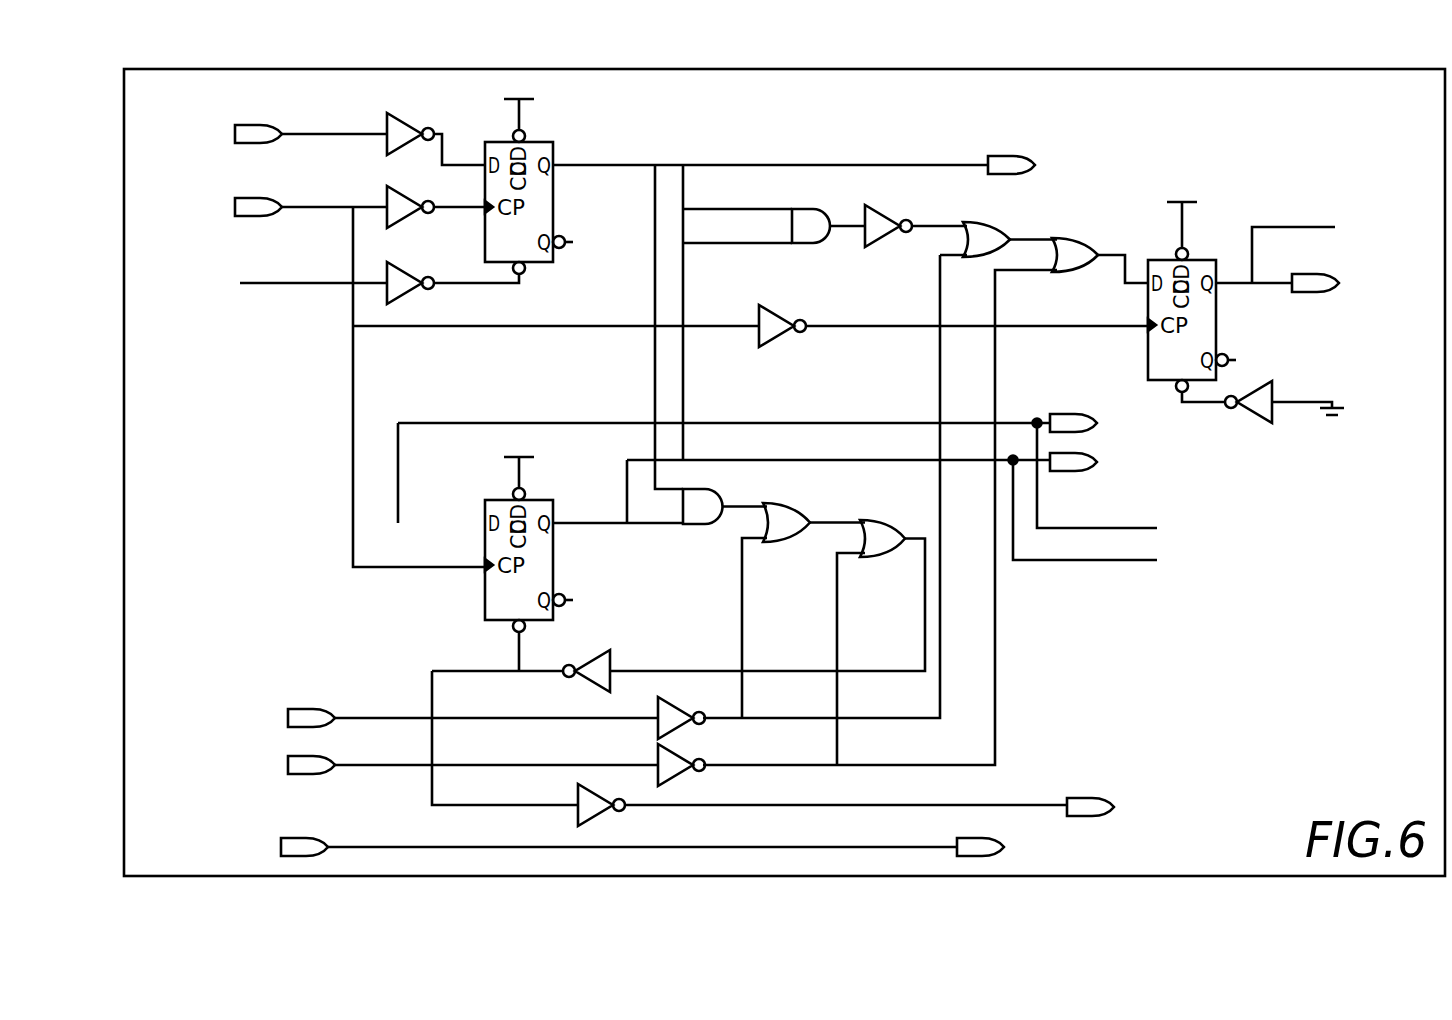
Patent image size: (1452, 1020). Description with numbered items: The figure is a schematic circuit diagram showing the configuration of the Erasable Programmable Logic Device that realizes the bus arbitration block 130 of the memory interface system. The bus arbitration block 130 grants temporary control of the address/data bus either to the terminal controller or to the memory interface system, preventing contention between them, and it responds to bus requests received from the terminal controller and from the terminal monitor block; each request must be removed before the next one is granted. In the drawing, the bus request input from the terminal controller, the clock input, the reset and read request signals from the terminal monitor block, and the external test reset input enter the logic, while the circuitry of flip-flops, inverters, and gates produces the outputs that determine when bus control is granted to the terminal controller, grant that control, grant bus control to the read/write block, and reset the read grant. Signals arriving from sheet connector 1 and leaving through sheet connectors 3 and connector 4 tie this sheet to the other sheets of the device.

The bus arbitration block 130 is at (1020, 67).
The sheet connector SH 1 is at (183, 403).
The sheet connector GH 3 is at (1228, 387).
The connector CN4 4 is at (609, 847).